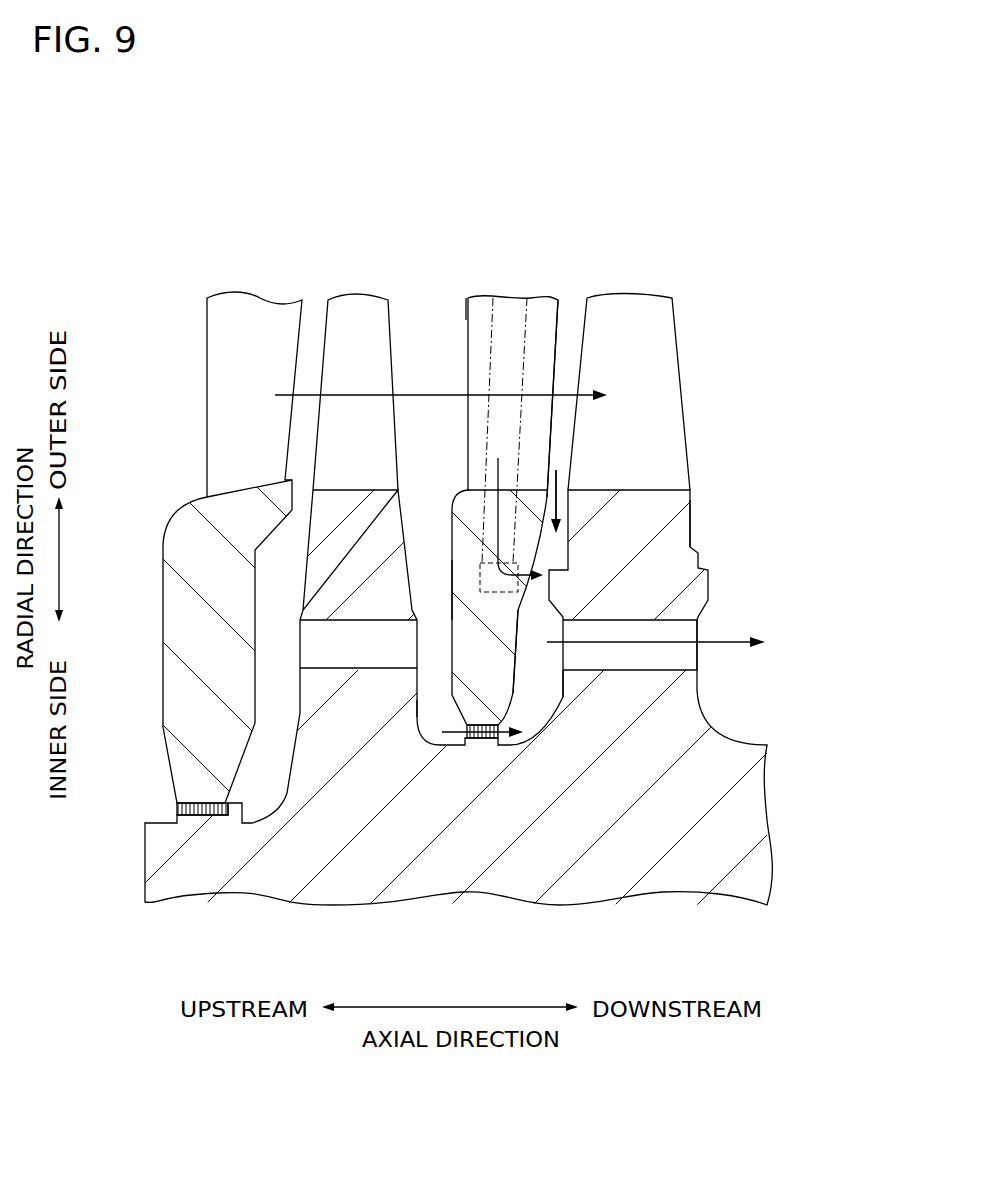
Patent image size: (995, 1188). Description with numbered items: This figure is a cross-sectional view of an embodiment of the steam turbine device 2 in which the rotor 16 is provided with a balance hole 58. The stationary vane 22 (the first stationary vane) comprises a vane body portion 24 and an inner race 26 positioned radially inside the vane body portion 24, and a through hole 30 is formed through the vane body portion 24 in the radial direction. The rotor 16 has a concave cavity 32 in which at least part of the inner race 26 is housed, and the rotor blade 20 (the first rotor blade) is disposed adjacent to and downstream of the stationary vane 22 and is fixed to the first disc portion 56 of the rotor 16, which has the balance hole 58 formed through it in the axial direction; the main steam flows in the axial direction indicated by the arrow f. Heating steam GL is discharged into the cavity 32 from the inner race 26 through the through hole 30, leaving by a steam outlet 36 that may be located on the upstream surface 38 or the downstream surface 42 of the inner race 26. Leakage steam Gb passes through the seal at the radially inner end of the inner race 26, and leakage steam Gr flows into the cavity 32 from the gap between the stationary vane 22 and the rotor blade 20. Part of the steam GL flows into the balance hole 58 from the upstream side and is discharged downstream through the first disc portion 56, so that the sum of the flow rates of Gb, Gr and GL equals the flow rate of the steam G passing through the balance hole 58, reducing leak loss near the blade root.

The steam turbine device 2 is at (488, 130).
The rotor 16 is at (720, 727).
The rotor blade 20 is at (313, 432).
The stationary vane 22 is at (207, 357).
The vane body portion 24 is at (466, 310).
The inner race 26 is at (155, 667).
The through hole 30 is at (523, 348).
The cavity 32 is at (428, 707).
The steam outlet 36 is at (532, 578).
The upstream surface of the inner race 38 is at (452, 590).
The downstream surface of the inner race 42 is at (558, 690).
The first disc portion 56 is at (692, 525).
The balance hole 58 is at (680, 622).
The main flow direction f is at (428, 393).
The steam flowing through the balance hole G is at (730, 647).
The leakage steam Gb is at (453, 737).
The leakage steam Gr is at (570, 480).
The heating steam GL is at (498, 470).